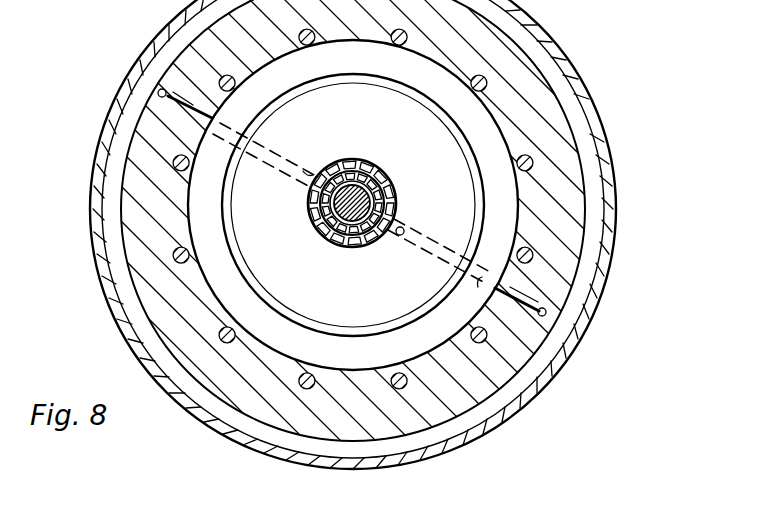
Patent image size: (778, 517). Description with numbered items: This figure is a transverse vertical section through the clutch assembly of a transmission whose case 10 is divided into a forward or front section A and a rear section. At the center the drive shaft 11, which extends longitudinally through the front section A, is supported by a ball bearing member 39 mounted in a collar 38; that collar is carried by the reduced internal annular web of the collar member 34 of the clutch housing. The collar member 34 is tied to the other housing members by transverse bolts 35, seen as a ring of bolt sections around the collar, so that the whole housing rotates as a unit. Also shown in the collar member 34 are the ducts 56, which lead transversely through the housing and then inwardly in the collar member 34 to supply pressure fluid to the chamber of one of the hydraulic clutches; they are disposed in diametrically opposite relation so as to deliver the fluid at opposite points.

The case 10 is at (599, 118).
The collar member 34 is at (569, 189).
The transverse bolts 35 is at (484, 72).
The front section A is at (100, 268).
The ducts 56 is at (158, 93).
The ball bearing member 39 is at (389, 197).
The drive shaft 11 is at (357, 219).
The collar 38 is at (400, 235).